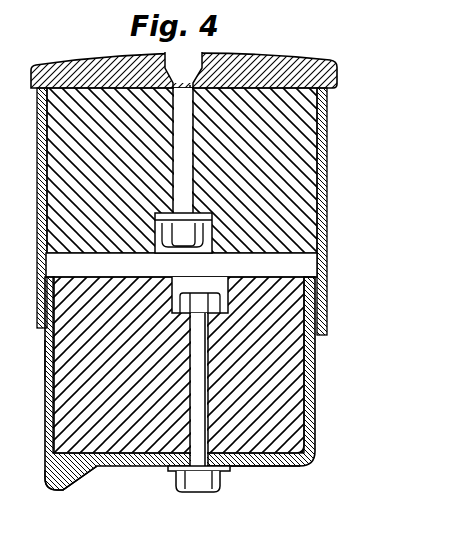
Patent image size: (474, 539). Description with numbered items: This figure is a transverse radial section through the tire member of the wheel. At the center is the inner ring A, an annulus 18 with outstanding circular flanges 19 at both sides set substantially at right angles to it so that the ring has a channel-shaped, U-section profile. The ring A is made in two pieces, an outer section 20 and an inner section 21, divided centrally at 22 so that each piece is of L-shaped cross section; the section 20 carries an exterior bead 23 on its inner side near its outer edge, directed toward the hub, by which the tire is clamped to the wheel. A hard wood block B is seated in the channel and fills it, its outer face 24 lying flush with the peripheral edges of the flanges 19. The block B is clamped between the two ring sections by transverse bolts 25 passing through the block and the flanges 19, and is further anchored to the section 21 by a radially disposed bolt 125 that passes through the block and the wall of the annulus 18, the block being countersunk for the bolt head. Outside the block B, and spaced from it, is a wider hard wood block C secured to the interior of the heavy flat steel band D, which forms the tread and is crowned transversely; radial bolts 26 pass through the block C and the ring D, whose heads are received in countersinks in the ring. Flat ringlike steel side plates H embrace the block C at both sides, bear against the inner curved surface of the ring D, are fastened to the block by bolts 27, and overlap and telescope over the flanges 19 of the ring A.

The outer bandlike ring D is at (168, 63).
The transverse bolts 25 is at (31, 70).
The side plates H is at (37, 300).
The outer hard wood blocks C is at (176, 170).
The bolts 27 is at (37, 160).
The outer faces of blocks B 24 is at (100, 278).
The inner hard wood blocks B is at (270, 425).
The inner ring A is at (183, 396).
The circular flanges 19 is at (310, 408).
The outer section of annulus 20 is at (45, 362).
The inner section of annulus 21 is at (317, 352).
The annulus 18 is at (267, 470).
The exterior bead 23 is at (47, 483).
The radial bolts 26 is at (187, 276).
The central division of annulus 22 is at (160, 468).
The radially disposed bolt 125 is at (194, 491).